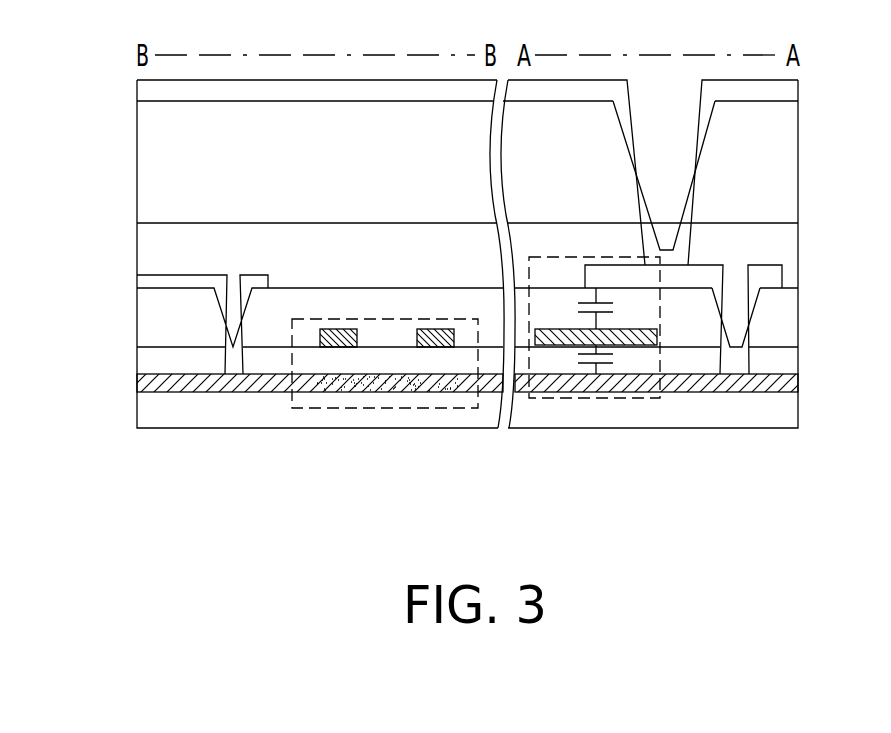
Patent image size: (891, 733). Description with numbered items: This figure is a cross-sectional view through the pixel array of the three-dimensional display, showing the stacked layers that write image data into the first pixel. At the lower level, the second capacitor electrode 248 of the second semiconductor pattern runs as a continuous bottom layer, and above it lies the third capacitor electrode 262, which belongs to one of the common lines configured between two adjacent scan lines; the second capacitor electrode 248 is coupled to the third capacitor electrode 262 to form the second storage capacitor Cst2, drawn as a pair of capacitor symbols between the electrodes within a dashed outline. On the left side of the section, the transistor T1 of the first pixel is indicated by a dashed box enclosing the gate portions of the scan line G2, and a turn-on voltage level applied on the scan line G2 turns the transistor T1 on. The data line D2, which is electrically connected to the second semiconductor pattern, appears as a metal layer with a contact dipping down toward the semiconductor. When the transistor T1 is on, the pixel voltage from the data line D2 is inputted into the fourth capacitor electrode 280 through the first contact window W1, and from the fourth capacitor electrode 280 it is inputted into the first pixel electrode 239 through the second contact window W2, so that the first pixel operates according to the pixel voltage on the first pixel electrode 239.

The first pixel electrode 239 is at (790, 87).
The fourth capacitor electrode 280 is at (777, 275).
The second contact window W2 is at (668, 250).
The first contact window W1 is at (747, 325).
The data line D2 is at (142, 281).
The scan line G2 is at (433, 340).
The transistor T1 is at (385, 363).
The third capacitor electrode 262 is at (553, 345).
The second storage capacitor Cst2 is at (595, 374).
The second capacitor electrode 248 is at (723, 392).